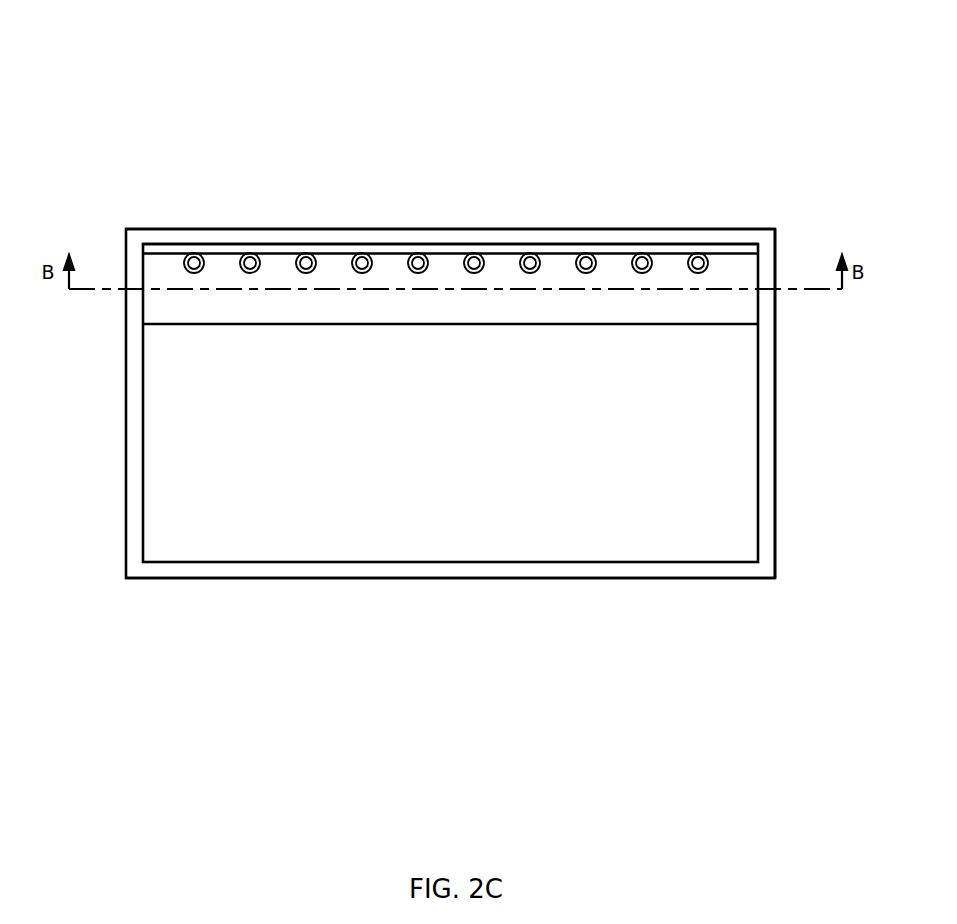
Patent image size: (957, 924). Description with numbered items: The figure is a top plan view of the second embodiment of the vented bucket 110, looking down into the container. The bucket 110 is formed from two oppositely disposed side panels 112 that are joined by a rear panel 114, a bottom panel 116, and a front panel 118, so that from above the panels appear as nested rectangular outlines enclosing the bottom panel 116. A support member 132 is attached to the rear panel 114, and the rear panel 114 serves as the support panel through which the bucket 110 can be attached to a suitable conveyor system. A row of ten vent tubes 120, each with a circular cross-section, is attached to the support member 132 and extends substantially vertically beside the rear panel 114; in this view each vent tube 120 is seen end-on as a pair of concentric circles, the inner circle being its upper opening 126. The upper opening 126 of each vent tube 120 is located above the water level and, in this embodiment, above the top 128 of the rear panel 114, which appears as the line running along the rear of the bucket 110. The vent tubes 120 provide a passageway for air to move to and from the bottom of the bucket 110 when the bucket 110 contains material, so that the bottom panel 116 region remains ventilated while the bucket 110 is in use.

The vented bucket 110 is at (378, 92).
The side panels 112 is at (775, 485).
The rear panel 114 is at (555, 228).
The bottom panel 116 is at (168, 275).
The front panel 118 is at (310, 578).
The vent tubes 120 is at (240, 256).
The upper opening 126 is at (256, 255).
The top of the rear panel 128 is at (442, 238).
The support member 132 is at (677, 245).